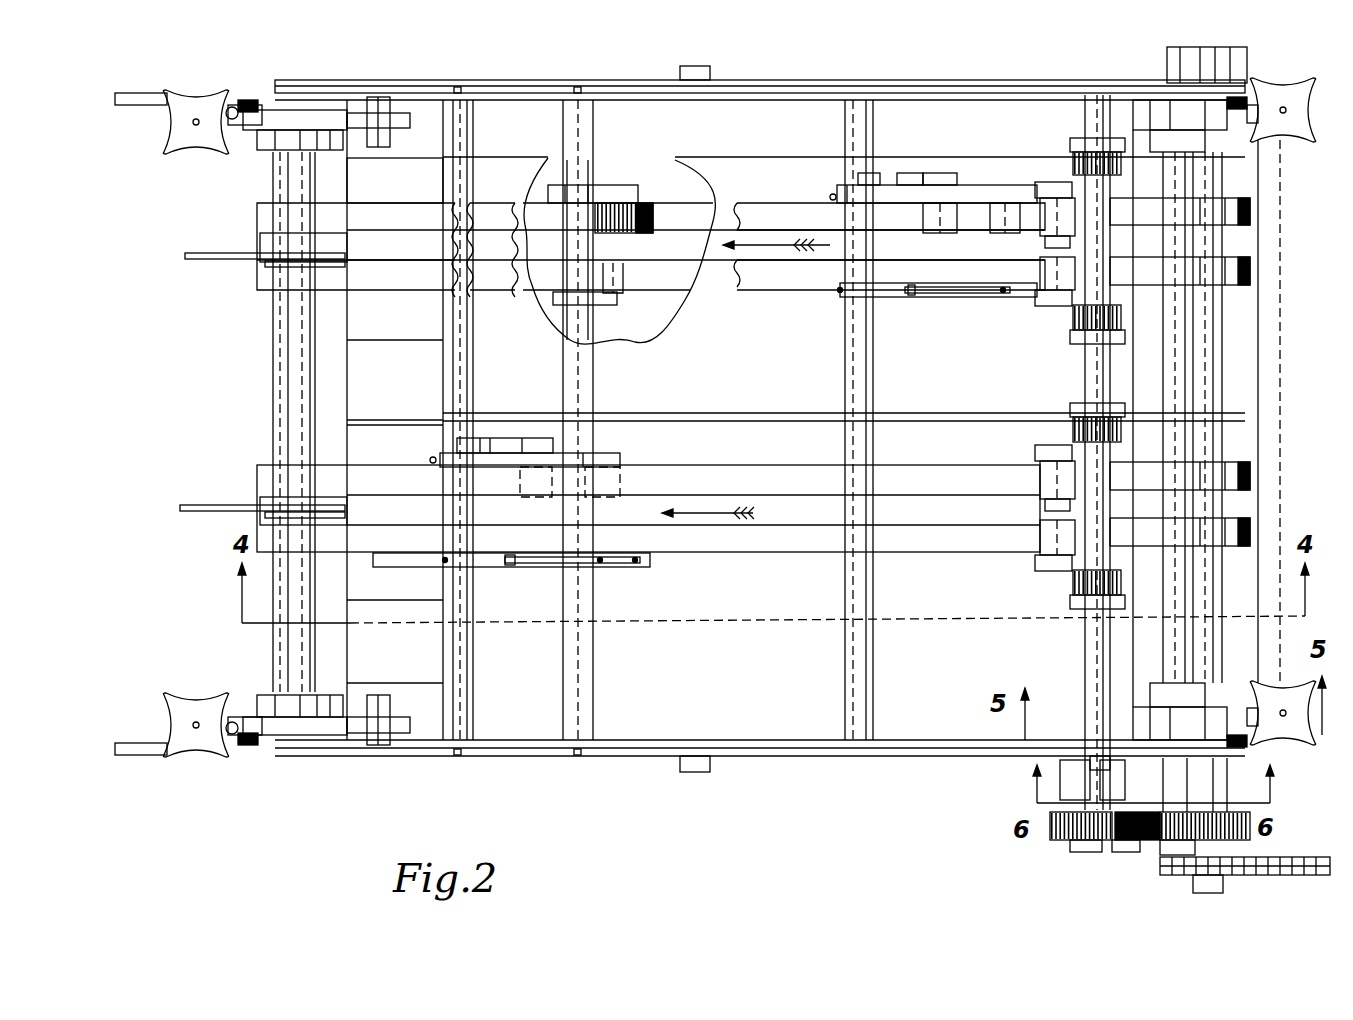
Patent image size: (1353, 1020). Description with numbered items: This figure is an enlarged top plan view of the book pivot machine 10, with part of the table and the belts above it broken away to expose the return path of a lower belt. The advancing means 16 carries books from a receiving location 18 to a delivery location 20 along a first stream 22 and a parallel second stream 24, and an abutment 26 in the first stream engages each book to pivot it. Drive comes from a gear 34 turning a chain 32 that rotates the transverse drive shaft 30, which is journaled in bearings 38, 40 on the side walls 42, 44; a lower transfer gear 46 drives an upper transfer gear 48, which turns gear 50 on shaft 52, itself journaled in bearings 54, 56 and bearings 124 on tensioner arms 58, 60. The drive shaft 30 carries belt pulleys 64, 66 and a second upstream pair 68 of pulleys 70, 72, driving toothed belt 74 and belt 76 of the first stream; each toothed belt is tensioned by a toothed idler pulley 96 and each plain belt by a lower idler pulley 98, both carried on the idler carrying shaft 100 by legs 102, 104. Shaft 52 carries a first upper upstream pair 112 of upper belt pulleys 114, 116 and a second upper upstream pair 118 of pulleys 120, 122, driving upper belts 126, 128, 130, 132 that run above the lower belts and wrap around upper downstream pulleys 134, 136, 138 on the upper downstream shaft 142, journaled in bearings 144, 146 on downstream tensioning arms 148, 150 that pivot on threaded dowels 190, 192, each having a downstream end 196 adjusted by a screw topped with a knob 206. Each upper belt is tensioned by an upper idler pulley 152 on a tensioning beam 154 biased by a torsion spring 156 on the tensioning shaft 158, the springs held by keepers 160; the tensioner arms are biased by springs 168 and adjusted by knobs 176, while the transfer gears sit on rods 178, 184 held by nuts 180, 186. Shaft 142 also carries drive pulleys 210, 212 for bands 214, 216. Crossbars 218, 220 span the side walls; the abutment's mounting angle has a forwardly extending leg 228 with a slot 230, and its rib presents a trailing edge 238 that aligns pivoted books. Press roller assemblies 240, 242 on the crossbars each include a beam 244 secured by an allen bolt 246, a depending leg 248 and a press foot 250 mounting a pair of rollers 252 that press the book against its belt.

The book pivot machine 10 is at (770, 805).
The advancing means 16 is at (752, 195).
The receiving location 18 is at (1240, 240).
The delivery location 20 is at (253, 243).
The first stream 22 is at (790, 242).
The second stream 24 is at (729, 513).
The abutment 26 is at (1007, 303).
The drive shaft 30 is at (1205, 378).
The chain 32 is at (1168, 866).
The gear 34 is at (1240, 852).
The bearing 38 is at (1297, 790).
The bearing 40 is at (1248, 72).
The side wall 42 is at (937, 745).
The side wall 44 is at (915, 92).
The lower transfer gear 46 is at (1085, 850).
The upper transfer gear 48 is at (1050, 840).
The gear 50 is at (1200, 803).
The shaft 52 is at (1177, 418).
The bearing 54 is at (1195, 690).
The bearing 56 is at (1187, 132).
The tensioner arm 58 is at (1222, 708).
The tensioner arm 60 is at (1210, 113).
The belt pulley 64 is at (1215, 120).
The belt pulley 66 is at (1297, 411).
The second upstream pair 68 is at (1230, 455).
The belt pulley 70 is at (1238, 492).
The belt pulley 72 is at (1225, 547).
The toothed belt 74 is at (682, 212).
The belt 76 is at (655, 292).
The toothed idler pulley 96 is at (605, 237).
The lower idler pulley 98 is at (640, 303).
The idler carrying shaft 100 is at (590, 706).
The leg 102 is at (590, 194).
The leg 104 is at (590, 340).
The first upper upstream pair 112 is at (1173, 295).
The upper belt pulley 114 is at (1180, 241).
The upper belt pulley 116 is at (1200, 284).
The second upper upstream pair 118 is at (1200, 612).
The upper belt pulley 120 is at (1175, 452).
The upper belt pulley 122 is at (1233, 512).
The bearing 124 is at (1145, 127).
The upper belt 126 is at (802, 218).
The upper belt 128 is at (800, 297).
The upper belt 130 is at (880, 472).
The upper belt 132 is at (932, 547).
The upper downstream pulley 134 is at (340, 205).
The upper downstream pulley 136 is at (325, 297).
The upper downstream pulley 138 is at (325, 470).
The upper downstream shaft 142 is at (305, 405).
The bearing 144 is at (255, 715).
The bearing 146 is at (305, 140).
The downstream tensioning arm 148 is at (272, 727).
The downstream tensioning arm 150 is at (262, 108).
The upper idler pulley 152 is at (1048, 228).
The tensioning beam 154 is at (1062, 186).
The torsion spring 156 is at (1065, 160).
The tensioning shaft 158 is at (1100, 682).
The keeper 160 is at (1080, 147).
The spring 168 is at (246, 106).
The knob 176 is at (1300, 125).
The rod 178 is at (1105, 850).
The nut 180 is at (1125, 850).
The rod 184 is at (1037, 803).
The nut 186 is at (1065, 768).
The threaded dowel 190 is at (385, 705).
The threaded dowel 192 is at (385, 135).
The downstream end 196 is at (250, 120).
The knob 206 is at (190, 138).
The drive pulley 210 is at (268, 515).
The drive pulley 212 is at (268, 262).
The band 214 is at (228, 505).
The band 216 is at (232, 258).
The crossbar 218 is at (855, 413).
The crossbar 220 is at (470, 400).
The forwardly extending leg 228 is at (930, 300).
The slot 230 is at (966, 300).
The trailing edge 238 is at (920, 287).
The press roller assembly 240 is at (928, 167).
The press roller assembly 242 is at (565, 450).
The beam 244 is at (860, 197).
The allen bolt 246 is at (833, 195).
The depending leg 248 is at (906, 178).
The press foot 250 is at (963, 192).
The roller 252 is at (548, 505).